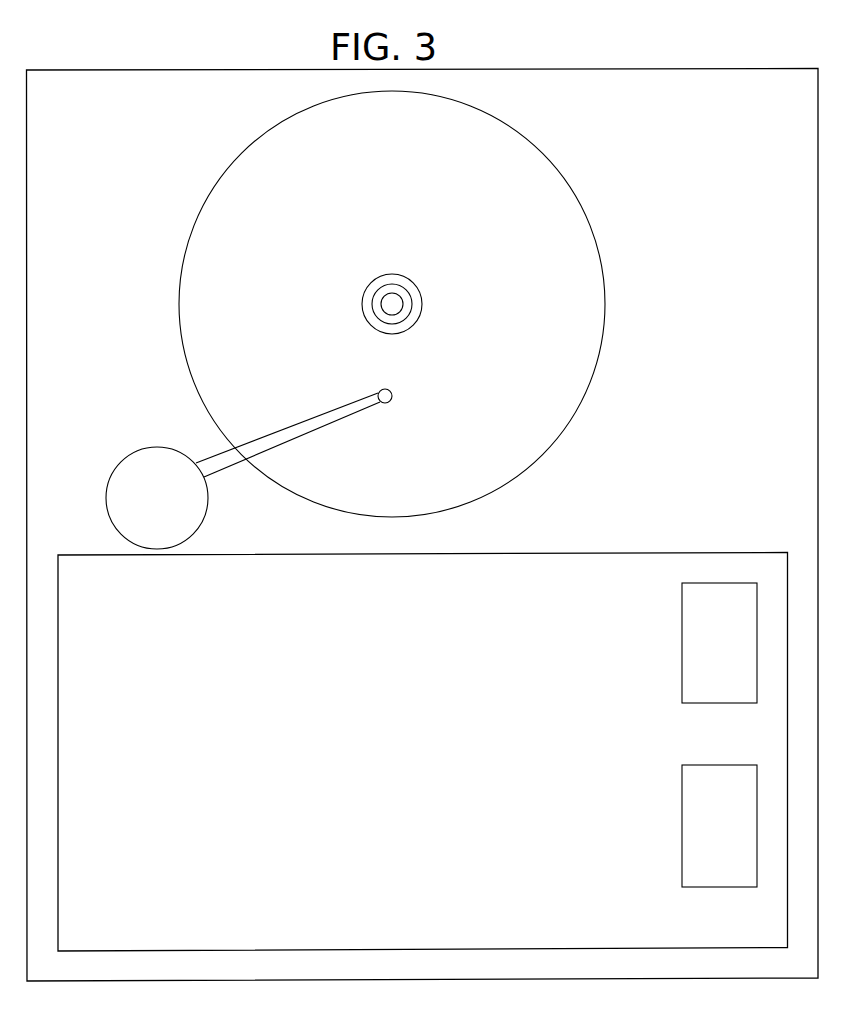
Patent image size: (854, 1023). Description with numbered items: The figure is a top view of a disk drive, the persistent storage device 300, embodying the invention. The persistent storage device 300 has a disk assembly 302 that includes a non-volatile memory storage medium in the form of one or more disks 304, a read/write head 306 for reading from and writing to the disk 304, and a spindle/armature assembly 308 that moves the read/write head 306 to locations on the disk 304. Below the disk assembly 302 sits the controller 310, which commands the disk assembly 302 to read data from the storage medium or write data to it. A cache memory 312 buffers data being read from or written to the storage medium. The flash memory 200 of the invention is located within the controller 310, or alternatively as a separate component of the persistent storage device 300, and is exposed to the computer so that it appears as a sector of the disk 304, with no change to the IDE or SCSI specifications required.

The persistent storage device 300 is at (665, 69).
The disk assembly 302 is at (399, 320).
The disk 304 is at (540, 237).
The read/write head 306 is at (391, 393).
The spindle/armature assembly 308 is at (267, 445).
The controller 310 is at (343, 779).
The cache memory 312 is at (681, 642).
The flash memory 200 is at (681, 827).